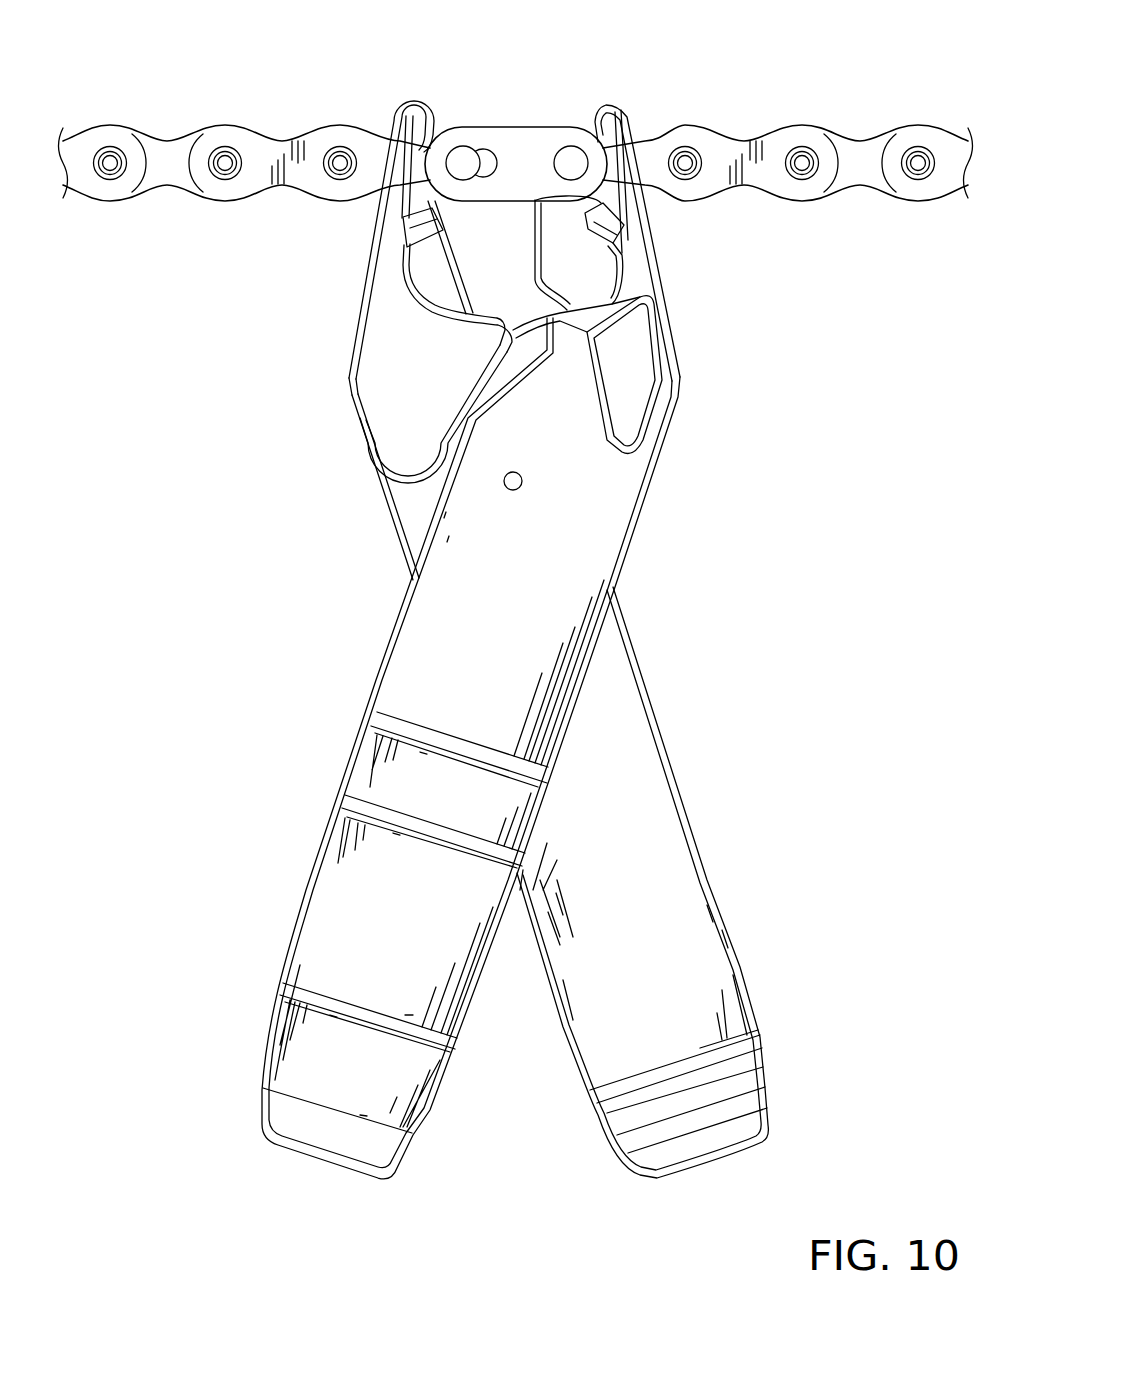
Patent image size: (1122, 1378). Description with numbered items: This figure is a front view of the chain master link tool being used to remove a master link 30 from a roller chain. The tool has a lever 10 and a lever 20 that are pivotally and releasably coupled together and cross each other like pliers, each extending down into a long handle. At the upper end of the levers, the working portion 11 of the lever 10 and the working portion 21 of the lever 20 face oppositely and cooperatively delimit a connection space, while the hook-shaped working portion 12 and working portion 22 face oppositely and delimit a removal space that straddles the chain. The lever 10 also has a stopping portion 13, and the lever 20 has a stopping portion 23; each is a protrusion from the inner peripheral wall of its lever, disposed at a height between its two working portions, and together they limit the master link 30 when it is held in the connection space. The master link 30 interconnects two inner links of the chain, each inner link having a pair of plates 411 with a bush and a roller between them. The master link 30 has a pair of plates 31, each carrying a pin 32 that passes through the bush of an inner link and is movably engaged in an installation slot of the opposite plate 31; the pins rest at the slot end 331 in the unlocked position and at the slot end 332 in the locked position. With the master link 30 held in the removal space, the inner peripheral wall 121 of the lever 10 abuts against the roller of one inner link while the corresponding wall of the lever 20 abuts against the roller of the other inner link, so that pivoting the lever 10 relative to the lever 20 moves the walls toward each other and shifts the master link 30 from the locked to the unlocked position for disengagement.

The lever 10 is at (340, 750).
The working portion 11 is at (620, 275).
The working portion 12 is at (624, 108).
The stopping portion 13 is at (626, 240).
The lever 20 is at (708, 796).
The working portion 21 is at (395, 283).
The working portion 22 is at (421, 103).
The stopping portion 23 is at (403, 216).
The master link 30 is at (517, 110).
The plate 31 is at (507, 193).
The pin 32 is at (345, 163).
The inner peripheral wall 121 is at (577, 191).
The end of installation slot 331 is at (477, 150).
The end of installation slot 332 is at (461, 150).
The plate 411 is at (418, 158).